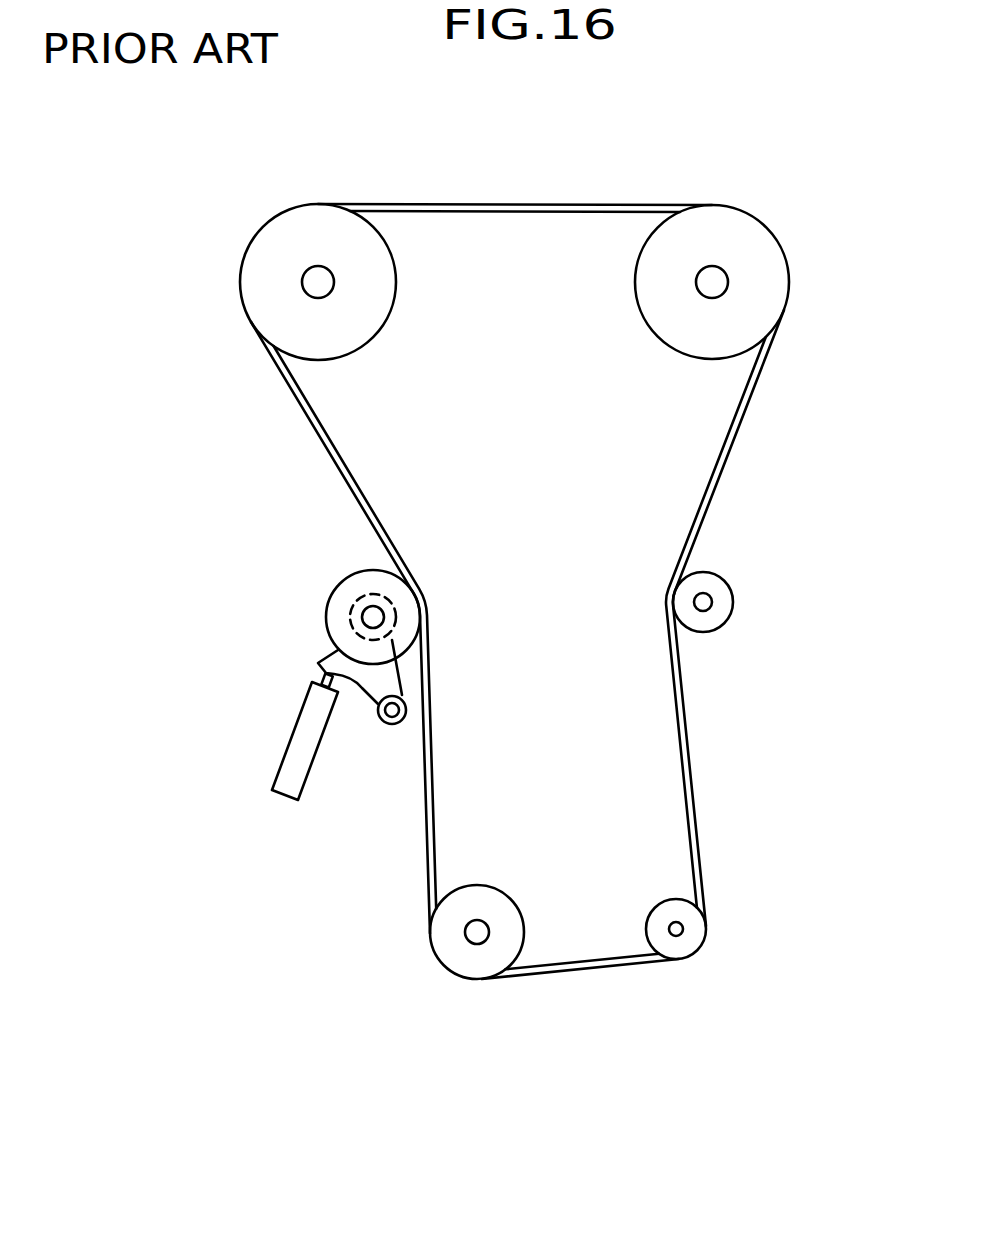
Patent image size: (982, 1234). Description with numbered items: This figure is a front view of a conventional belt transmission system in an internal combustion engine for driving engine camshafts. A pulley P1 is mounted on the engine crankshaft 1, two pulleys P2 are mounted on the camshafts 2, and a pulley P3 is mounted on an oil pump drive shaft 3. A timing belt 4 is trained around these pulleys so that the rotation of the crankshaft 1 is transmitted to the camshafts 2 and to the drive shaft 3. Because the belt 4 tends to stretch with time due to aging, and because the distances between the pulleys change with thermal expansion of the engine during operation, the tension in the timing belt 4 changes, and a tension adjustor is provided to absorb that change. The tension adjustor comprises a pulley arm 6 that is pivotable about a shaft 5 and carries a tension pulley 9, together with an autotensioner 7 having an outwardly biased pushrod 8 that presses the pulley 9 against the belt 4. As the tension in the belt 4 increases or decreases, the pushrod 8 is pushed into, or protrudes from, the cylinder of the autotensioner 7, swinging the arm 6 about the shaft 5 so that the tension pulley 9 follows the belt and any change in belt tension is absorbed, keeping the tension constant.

The engine crankshaft 1 is at (470, 932).
The camshaft 2 is at (317, 278).
The oil pump drive shaft 3 is at (683, 930).
The timing belt 4 is at (312, 428).
The shaft 5 is at (388, 724).
The pulley arm 6 is at (392, 673).
The autotensioner 7 is at (285, 740).
The pushrod 8 is at (318, 675).
The tension pulley 9 is at (355, 582).
The pulley P1 is at (434, 977).
The pulley P2 is at (523, 241).
The pulley P3 is at (737, 957).